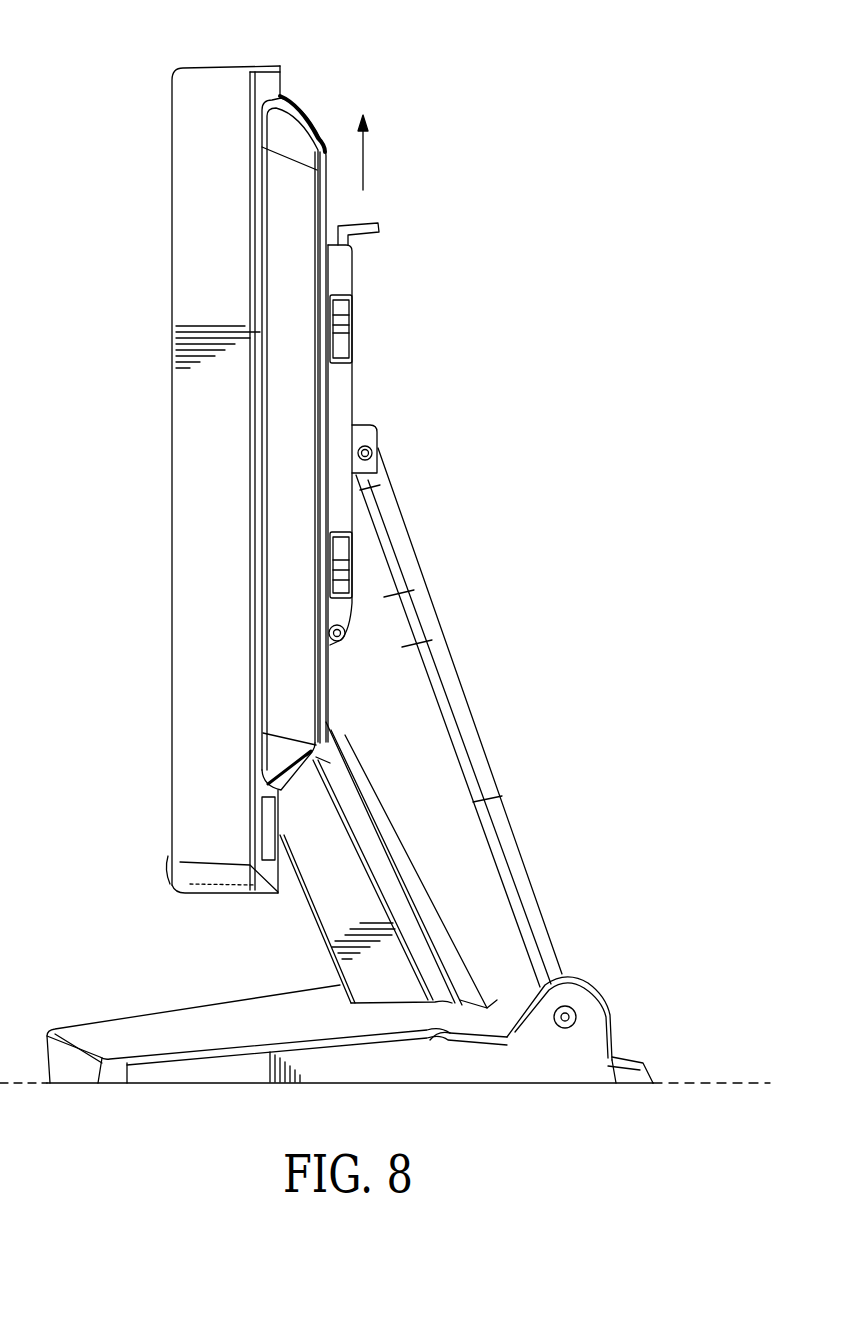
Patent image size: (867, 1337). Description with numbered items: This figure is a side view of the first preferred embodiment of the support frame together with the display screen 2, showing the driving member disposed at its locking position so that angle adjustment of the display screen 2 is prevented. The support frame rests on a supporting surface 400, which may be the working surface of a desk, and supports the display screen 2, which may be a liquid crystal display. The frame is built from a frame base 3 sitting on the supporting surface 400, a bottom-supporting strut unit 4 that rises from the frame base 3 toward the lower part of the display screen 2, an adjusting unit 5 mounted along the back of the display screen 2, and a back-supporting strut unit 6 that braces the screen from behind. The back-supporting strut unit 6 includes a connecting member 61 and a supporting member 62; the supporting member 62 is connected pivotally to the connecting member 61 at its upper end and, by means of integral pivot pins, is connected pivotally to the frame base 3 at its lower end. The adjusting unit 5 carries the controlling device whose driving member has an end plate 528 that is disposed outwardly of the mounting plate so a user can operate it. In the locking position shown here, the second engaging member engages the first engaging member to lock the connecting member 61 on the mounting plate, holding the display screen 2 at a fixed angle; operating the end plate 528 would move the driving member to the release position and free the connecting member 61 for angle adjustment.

The display screen 2 is at (193, 472).
The frame base 3 is at (160, 1030).
The bottom-supporting strut unit 4 is at (332, 920).
The adjusting unit 5 is at (343, 272).
The end plate 528 is at (380, 225).
The back-supporting strut unit 6 is at (498, 430).
The connecting member 61 is at (372, 433).
The supporting member 62 is at (410, 548).
The supporting surface 400 is at (705, 1082).